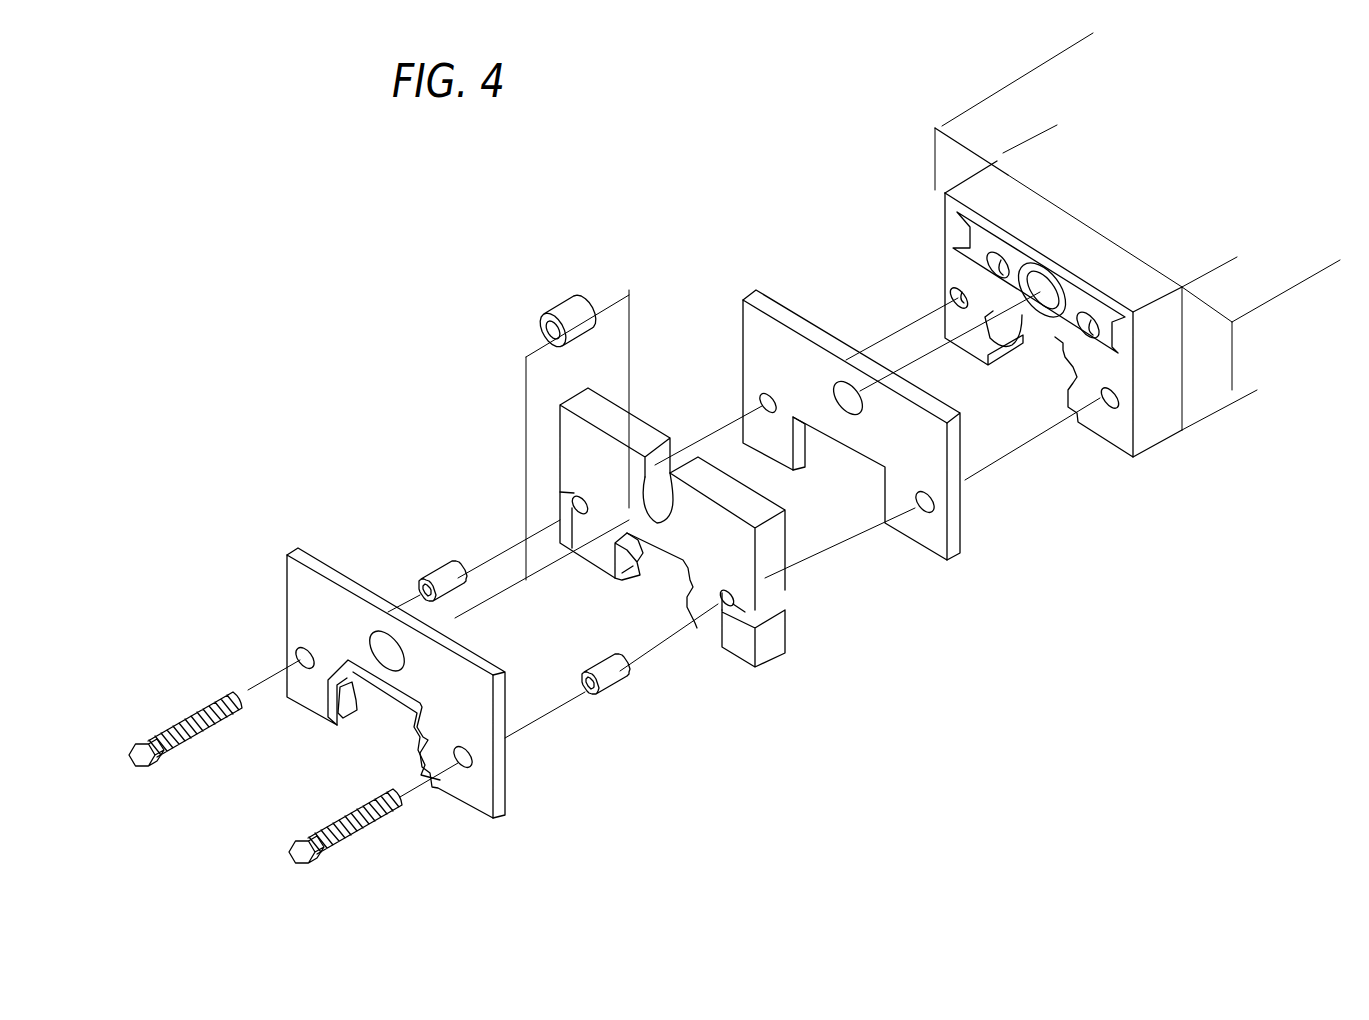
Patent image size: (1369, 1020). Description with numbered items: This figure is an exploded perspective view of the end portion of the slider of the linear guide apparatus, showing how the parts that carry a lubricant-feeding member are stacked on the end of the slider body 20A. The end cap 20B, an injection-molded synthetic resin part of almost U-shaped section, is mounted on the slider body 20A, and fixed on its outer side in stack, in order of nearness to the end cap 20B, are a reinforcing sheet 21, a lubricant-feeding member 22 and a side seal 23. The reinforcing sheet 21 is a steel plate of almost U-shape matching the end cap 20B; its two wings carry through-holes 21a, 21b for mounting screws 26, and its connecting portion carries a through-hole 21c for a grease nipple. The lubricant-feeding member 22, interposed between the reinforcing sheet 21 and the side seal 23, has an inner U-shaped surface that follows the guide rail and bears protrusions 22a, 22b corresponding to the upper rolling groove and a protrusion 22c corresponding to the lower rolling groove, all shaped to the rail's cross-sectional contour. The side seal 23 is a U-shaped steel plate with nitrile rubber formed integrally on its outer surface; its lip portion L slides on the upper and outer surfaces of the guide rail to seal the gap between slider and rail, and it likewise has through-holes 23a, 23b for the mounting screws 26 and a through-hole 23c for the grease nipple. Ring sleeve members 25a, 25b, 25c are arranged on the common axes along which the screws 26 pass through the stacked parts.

The housing body 20A is at (948, 120).
The end cap 20B is at (962, 183).
The reinforcing sheet 21 is at (955, 543).
The through-hole 21a is at (920, 514).
The through-hole 21b is at (762, 403).
The through-hole for grease nipple 21c is at (838, 398).
The lubricant-feeding member 22 is at (773, 652).
The protrusion 22a is at (726, 620).
The protrusion 22b is at (578, 565).
The protrusion 22c is at (662, 515).
The side seal 23 is at (478, 798).
The through-hole 23a is at (460, 770).
The through-hole 23b is at (298, 660).
The through-hole for grease nipple 23c is at (372, 648).
The ring sleeve member 25a is at (605, 700).
The ring sleeve member 25b is at (432, 572).
The ring sleeve member 25c is at (567, 297).
The mounting screw 26 is at (183, 714).
The lip portion L is at (357, 713).